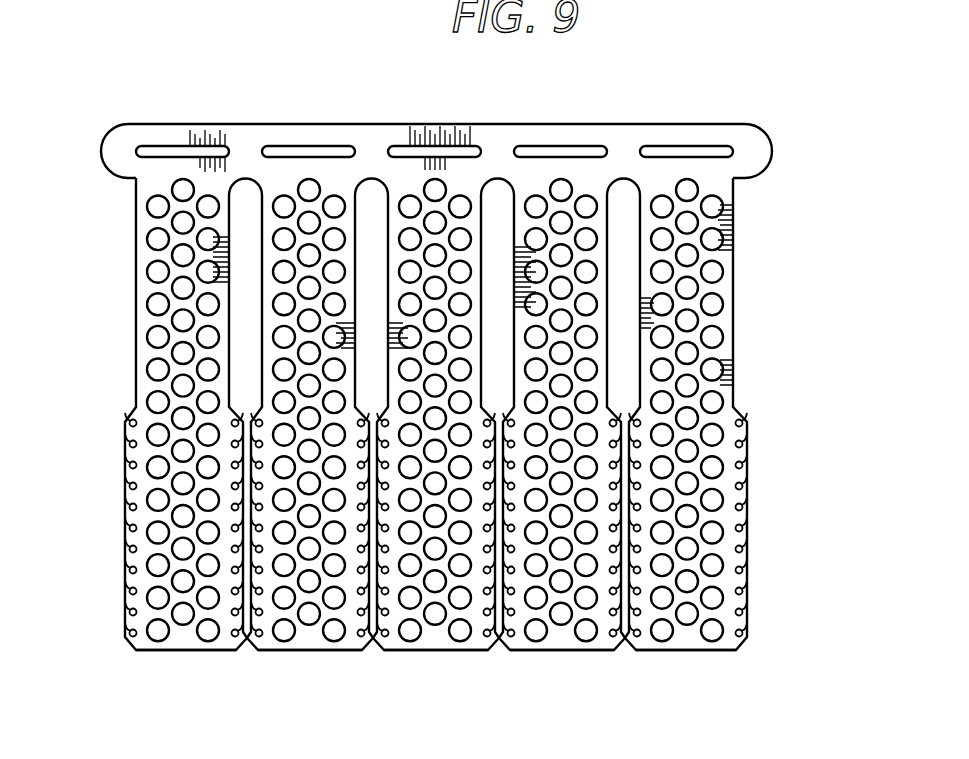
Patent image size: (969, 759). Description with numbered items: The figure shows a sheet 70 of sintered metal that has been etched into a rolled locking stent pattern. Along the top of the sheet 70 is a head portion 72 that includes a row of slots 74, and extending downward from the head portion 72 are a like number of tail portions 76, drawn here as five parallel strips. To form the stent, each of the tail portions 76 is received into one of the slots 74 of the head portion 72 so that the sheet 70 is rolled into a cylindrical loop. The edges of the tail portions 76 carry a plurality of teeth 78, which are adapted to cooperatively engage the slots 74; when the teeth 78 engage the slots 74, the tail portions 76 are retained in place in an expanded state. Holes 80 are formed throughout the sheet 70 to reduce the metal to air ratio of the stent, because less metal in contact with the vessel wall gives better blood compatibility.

The sheet 70 is at (104, 354).
The head portion 72 is at (778, 150).
The slots 74 is at (170, 150).
The tail portions 76 is at (184, 652).
The teeth 78 is at (124, 497).
The holes 80 is at (153, 558).